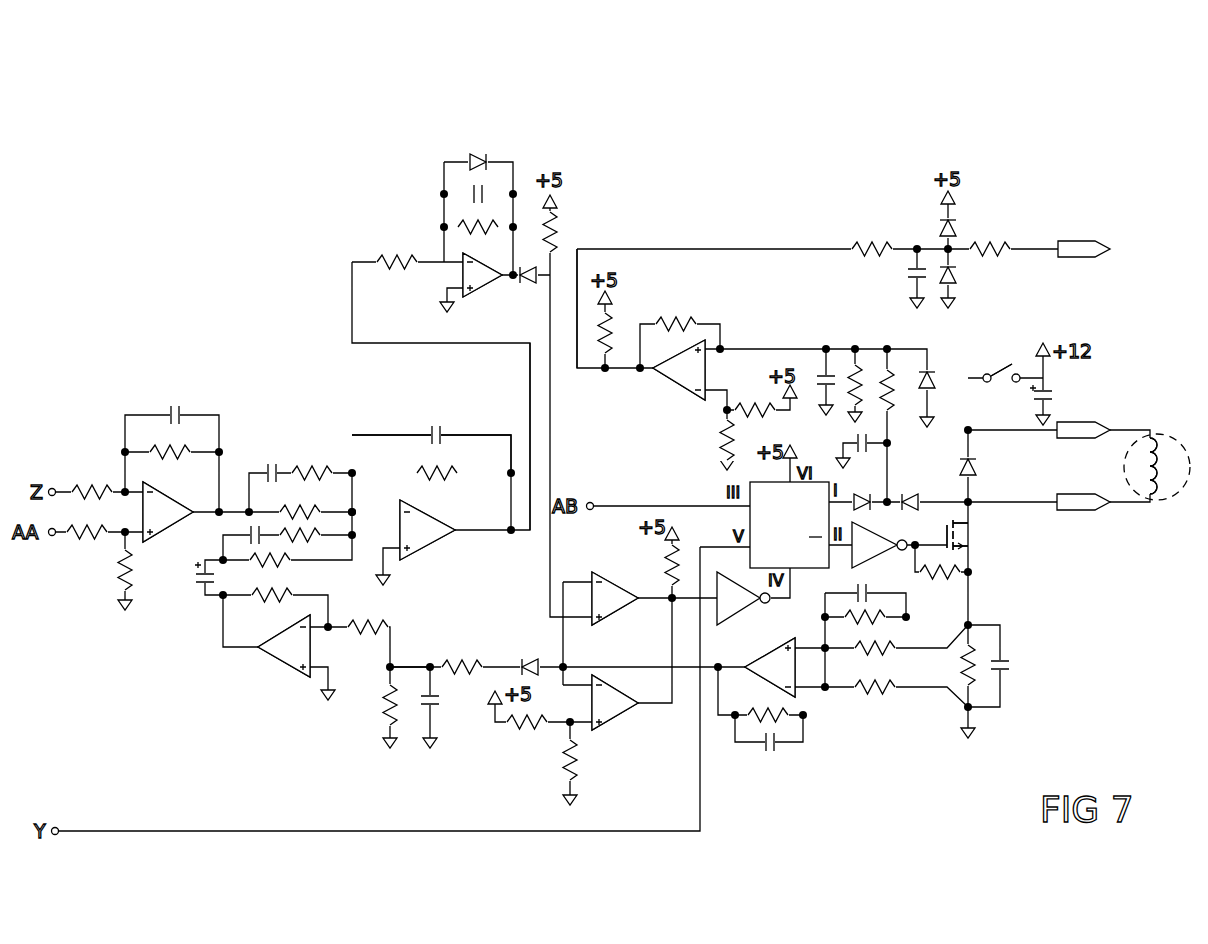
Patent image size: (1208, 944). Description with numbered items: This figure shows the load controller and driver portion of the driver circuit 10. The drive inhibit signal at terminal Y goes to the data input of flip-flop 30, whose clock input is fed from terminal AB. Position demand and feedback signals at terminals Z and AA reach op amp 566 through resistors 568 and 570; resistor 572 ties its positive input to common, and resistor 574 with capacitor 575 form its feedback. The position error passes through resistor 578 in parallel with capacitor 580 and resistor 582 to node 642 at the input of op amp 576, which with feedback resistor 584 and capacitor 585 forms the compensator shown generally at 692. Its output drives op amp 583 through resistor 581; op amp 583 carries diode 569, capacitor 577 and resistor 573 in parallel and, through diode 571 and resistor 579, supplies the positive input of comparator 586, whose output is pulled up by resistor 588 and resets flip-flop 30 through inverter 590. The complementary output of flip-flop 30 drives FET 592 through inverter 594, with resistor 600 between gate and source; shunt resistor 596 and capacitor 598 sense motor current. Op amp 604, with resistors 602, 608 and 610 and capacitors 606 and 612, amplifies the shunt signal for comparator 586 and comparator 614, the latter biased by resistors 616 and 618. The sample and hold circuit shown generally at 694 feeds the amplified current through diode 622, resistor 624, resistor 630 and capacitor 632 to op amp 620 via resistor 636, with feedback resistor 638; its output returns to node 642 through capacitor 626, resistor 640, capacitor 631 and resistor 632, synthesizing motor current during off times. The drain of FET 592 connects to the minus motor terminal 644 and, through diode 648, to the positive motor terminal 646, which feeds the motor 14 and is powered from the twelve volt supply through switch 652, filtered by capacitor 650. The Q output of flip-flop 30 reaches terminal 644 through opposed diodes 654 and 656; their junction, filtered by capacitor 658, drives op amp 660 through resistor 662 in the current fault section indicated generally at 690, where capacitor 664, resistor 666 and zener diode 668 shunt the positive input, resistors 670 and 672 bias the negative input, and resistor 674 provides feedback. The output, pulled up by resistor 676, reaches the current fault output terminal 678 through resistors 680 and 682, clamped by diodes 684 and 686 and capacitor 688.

The driver circuit 10 is at (484, 401).
The solenoid coil 14 is at (1172, 440).
The flip-flop 30 is at (789, 525).
The op amp 566 is at (175, 505).
The 50k ohm resistor 568 is at (92, 485).
The diode 569 is at (484, 155).
The 50k ohm resistor 570 is at (85, 540).
The diode 571 is at (528, 281).
The 200k ohm resistor 572 is at (120, 580).
The 499k ohm resistor 573 is at (465, 222).
The 200k ohm resistor 574 is at (172, 448).
The 100 picofarad capacitor 575 is at (176, 407).
The op amp 576 is at (430, 548).
The capacitor 577 is at (470, 186).
The 35k ohm resistor 578 is at (292, 508).
The 10k ohm resistor 579 is at (556, 225).
The 0.26 microfarad capacitor 580 is at (270, 468).
The 43k ohm resistor 581 is at (385, 255).
The 1.5k ohm resistor 582 is at (312, 468).
The op amp 583 is at (463, 272).
The 62k ohm resistor 584 is at (422, 470).
The 100 picofarad capacitor 585 is at (436, 432).
The comparator 586 is at (622, 608).
The 10k ohm resistor 588 is at (665, 570).
The inverter 590 is at (740, 604).
The FET 592 is at (970, 540).
The inverter 594 is at (875, 552).
The shunt resistor 596 is at (962, 665).
The 0.001 microfarad capacitor 598 is at (1006, 665).
The 10k ohm resistor 600 is at (940, 580).
The 12.4k ohm precision resistor 602 is at (868, 652).
The op amp 604 is at (760, 662).
The 22 picofarad capacitor 606 is at (860, 594).
The 100k ohm resistor 608 is at (872, 620).
The resistor 610 is at (768, 712).
The 22 picofarad capacitor 612 is at (772, 752).
The comparator 614 is at (618, 722).
The resistor 616 is at (530, 730).
The resistor 618 is at (578, 762).
The op amp 620 is at (285, 660).
The diode 622 is at (533, 660).
The 560 ohm resistor 624 is at (460, 660).
The 15 microfarad capacitor 626 is at (200, 578).
The 22k ohm resistor 630 is at (386, 700).
The 47 microfarad capacitor 631 is at (252, 532).
The capacitor / resistor 632 is at (300, 536).
The 36k ohm resistor 636 is at (368, 622).
The 10k ohm resistor 638 is at (272, 598).
The resistor 640 is at (280, 565).
The node 642 is at (353, 510).
The minus motor output voltage terminal 644 is at (1095, 508).
The positive motor output voltage terminal 646 is at (1090, 425).
The diode 648 is at (893, 425).
The 100 microfarad electrolytic capacitor 650 is at (1052, 392).
The normally open manual switch 652 is at (1010, 366).
The diode 654 is at (868, 500).
The diode 656 is at (908, 498).
The 0.001 microfarad capacitor 658 is at (855, 443).
The op amp 660 is at (690, 380).
The 4.3k ohm resistor 662 is at (966, 460).
The 0.01 microfarad capacitor 664 is at (820, 372).
The 43k ohm resistor 666 is at (850, 405).
The zener diode 668 is at (930, 370).
The 10k ohm resistor 670 is at (720, 440).
The 10k ohm resistor 672 is at (758, 400).
The 1 megohm resistor 674 is at (685, 318).
The 10k ohm resistor 676 is at (610, 320).
The current fault output terminal 678 is at (1085, 243).
The 1k ohm resistor 680 is at (862, 242).
The 1k ohm resistor 682 is at (983, 240).
The diode 684 is at (942, 225).
The diode 686 is at (955, 275).
The 0.1 microfarad capacitor 688 is at (910, 273).
The reference circuit 690 is at (742, 322).
The compensation circuit 692 is at (392, 426).
The sample and hold circuit 694 is at (392, 765).